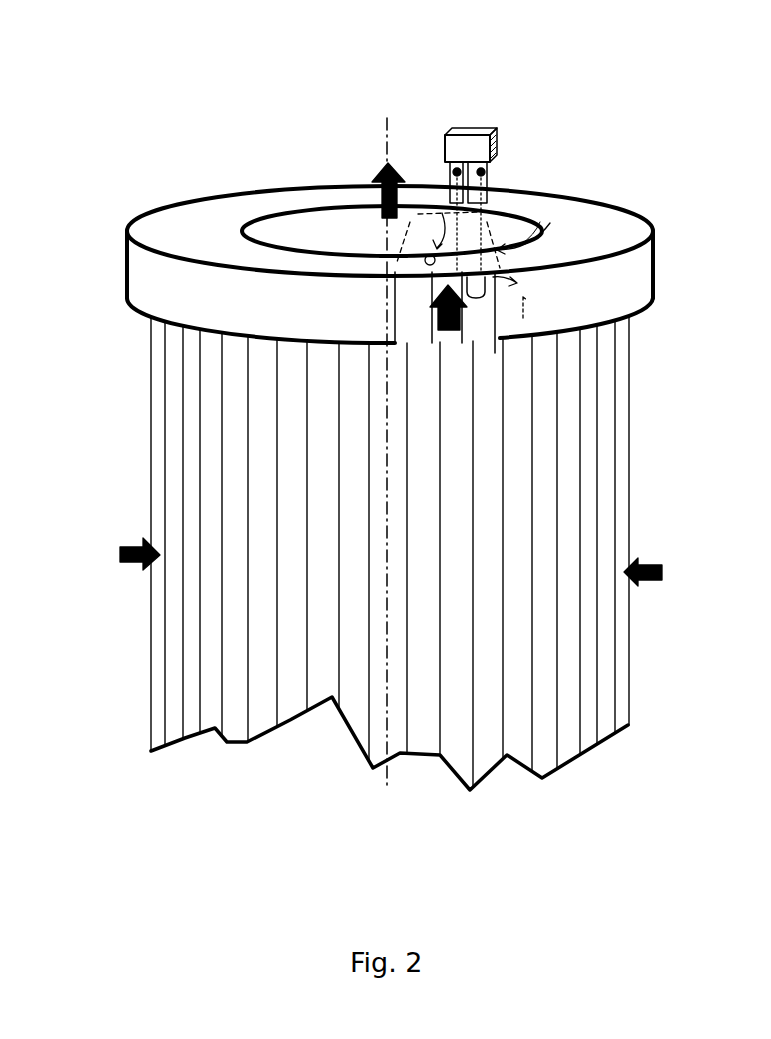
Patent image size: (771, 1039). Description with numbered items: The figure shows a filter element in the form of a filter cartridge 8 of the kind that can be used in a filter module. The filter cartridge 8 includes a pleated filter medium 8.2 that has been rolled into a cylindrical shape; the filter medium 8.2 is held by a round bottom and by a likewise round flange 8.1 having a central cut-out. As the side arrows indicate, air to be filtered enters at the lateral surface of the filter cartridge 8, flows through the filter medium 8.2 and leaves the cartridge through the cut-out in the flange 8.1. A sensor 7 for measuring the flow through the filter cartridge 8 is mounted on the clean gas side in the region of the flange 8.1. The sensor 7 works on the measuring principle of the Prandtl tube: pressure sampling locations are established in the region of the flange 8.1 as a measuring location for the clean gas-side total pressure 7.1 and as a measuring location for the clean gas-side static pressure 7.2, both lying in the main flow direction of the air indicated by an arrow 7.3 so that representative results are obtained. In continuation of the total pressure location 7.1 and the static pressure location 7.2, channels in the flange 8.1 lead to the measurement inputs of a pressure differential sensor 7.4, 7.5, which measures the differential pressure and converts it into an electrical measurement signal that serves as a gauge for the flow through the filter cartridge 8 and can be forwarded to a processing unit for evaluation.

The filter cartridge 8 is at (111, 117).
The flange 8.1 is at (163, 220).
The pleated filter medium 8.2 is at (176, 417).
The sensor 7 is at (497, 116).
The measuring location for the clean gas-side total pressure 7.1 is at (540, 222).
The measuring location for the clean gas-side static pressure 7.2 is at (383, 192).
The arrow 7.3 is at (462, 321).
The pressure differential sensor 7.4 is at (485, 172).
The pressure differential sensor 7.5 is at (452, 171).